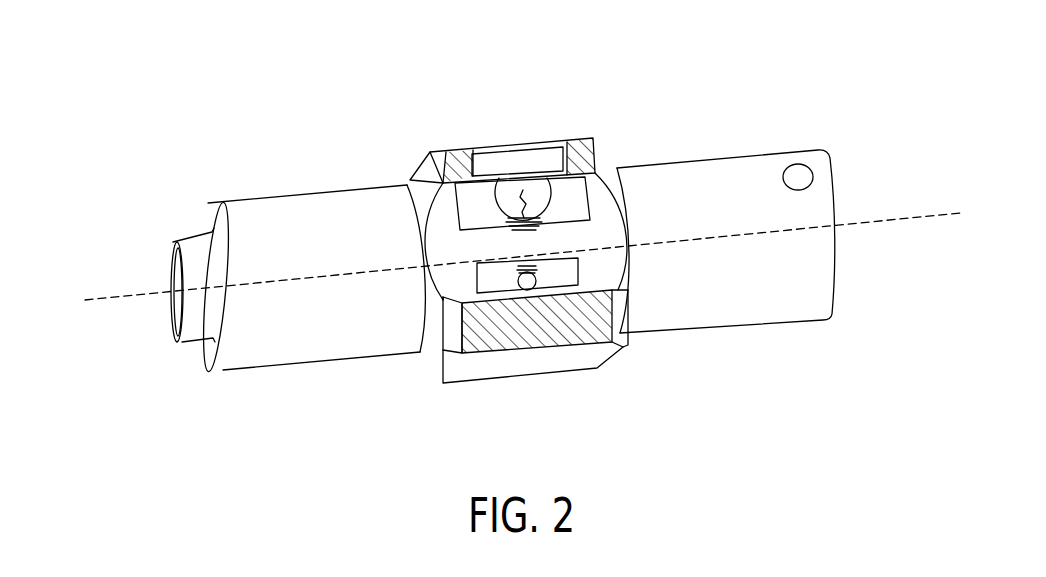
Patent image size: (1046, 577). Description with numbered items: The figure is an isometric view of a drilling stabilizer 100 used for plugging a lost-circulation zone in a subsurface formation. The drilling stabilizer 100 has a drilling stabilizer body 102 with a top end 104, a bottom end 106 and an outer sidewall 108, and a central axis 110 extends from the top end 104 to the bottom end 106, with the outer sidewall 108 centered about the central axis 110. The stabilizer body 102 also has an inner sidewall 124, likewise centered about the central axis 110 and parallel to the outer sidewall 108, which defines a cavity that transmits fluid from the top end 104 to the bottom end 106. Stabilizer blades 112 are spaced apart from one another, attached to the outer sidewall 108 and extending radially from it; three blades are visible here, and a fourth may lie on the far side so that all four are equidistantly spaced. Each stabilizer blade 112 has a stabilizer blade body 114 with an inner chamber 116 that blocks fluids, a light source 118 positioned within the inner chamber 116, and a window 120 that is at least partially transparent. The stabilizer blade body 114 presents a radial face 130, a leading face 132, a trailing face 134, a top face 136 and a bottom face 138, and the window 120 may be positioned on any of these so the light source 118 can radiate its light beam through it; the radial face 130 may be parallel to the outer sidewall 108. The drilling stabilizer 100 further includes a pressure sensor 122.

The drilling stabilizer 100 is at (214, 92).
The drilling stabilizer body 102 is at (245, 200).
The top end 104 is at (830, 172).
The bottom end 106 is at (175, 255).
The outer sidewall 108 is at (310, 215).
The central axis 110 is at (87, 298).
The stabilizer blades 112 is at (592, 140).
The stabilizer blade body 114 is at (615, 228).
The inner chamber 116 is at (588, 180).
The light source 118 is at (520, 165).
The window 120 is at (437, 160).
The pressure sensor 122 is at (800, 165).
The inner sidewall 124 is at (177, 305).
The radial face 130 is at (565, 323).
The leading face 132 is at (497, 370).
The trailing face 134 is at (450, 280).
The top face 136 is at (618, 318).
The bottom face 138 is at (438, 337).